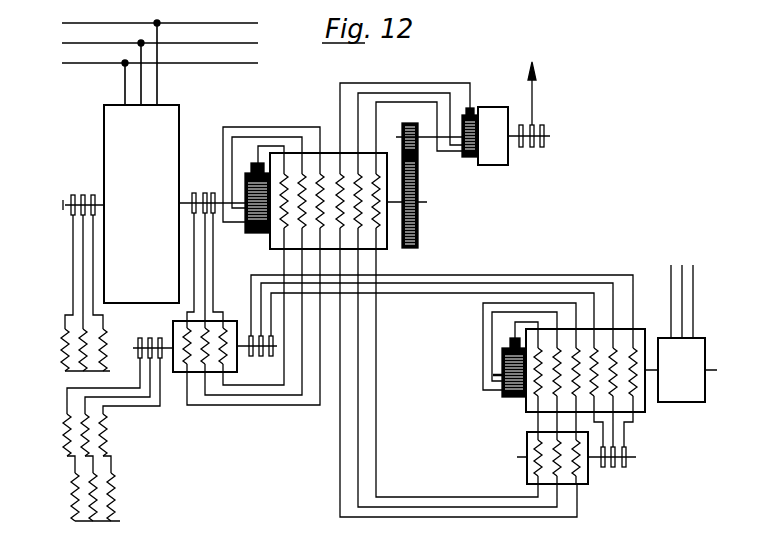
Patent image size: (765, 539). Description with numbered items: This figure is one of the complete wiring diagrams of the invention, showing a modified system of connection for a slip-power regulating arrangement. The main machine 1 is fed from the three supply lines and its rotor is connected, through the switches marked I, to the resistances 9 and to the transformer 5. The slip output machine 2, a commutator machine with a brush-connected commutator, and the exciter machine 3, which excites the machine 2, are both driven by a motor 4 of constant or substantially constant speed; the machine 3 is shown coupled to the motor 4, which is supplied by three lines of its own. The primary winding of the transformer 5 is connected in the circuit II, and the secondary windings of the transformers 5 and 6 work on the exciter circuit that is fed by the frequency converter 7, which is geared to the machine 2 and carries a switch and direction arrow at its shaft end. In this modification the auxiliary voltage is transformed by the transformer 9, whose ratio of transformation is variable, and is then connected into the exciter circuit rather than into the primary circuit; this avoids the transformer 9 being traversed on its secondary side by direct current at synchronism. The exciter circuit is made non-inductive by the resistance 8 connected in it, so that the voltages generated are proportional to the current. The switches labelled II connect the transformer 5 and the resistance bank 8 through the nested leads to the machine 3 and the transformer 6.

The main induction motor 1 is at (172, 126).
The slip output machine 2 is at (270, 236).
The exciter machine 3 is at (525, 400).
The motor 4 is at (686, 405).
The transformer 5 is at (173, 326).
The transformer 6 is at (527, 438).
The frequency converter 7 is at (498, 110).
The non-inductive resistance 8 is at (116, 494).
The transformer 9 is at (108, 381).
The switch group I is at (169, 175).
The circuit II is at (379, 290).